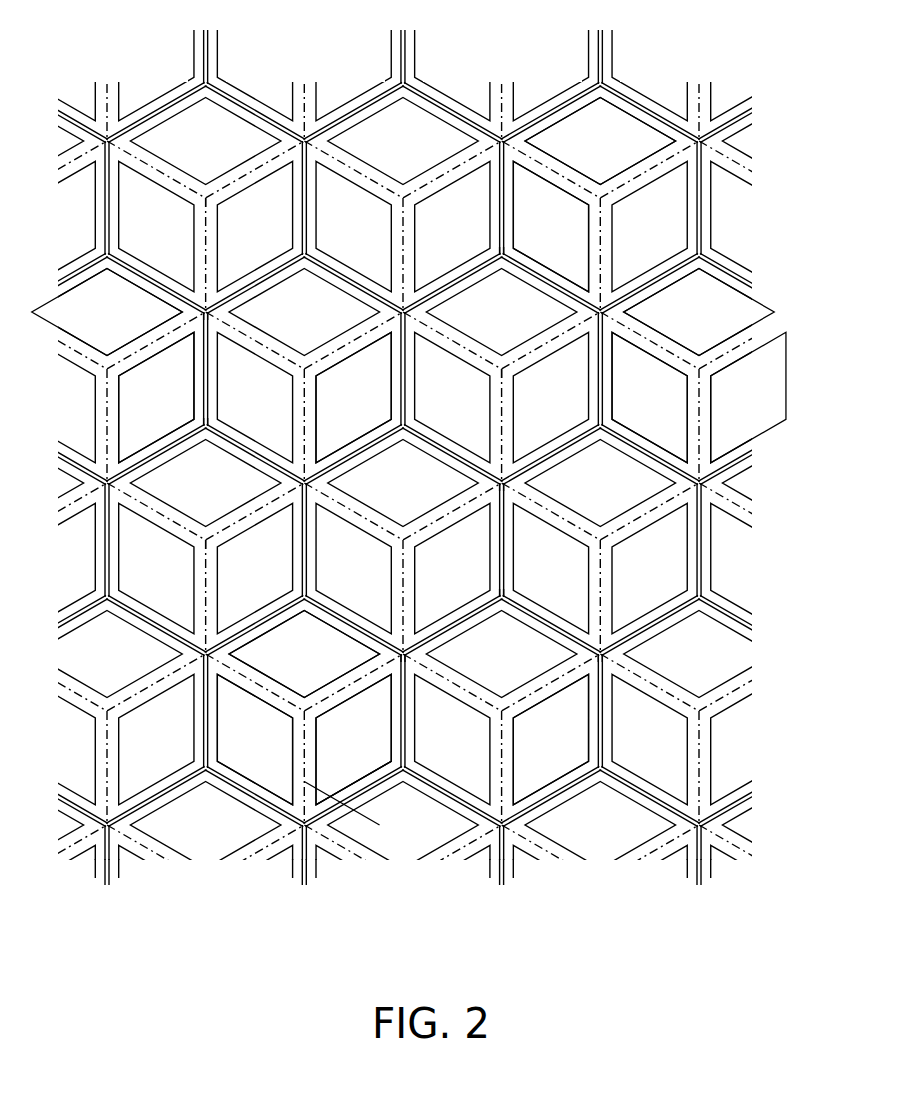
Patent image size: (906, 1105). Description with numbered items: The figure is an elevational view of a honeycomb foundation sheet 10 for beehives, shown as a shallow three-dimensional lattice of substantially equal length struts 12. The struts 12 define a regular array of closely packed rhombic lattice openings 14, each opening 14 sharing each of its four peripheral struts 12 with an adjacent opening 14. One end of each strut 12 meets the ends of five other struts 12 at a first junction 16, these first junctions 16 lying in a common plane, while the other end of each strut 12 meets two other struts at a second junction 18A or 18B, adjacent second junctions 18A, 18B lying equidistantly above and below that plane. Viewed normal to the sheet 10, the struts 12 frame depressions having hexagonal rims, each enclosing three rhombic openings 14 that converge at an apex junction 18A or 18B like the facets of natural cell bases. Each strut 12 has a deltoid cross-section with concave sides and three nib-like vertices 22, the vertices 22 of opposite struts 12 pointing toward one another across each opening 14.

The honeycomb foundation sheet 10 is at (207, 905).
The strut 12 is at (513, 215).
The rhombic lattice opening 14 is at (592, 133).
The first junction 16 is at (203, 311).
The second junction 18A is at (500, 250).
The second junction 18B is at (197, 207).
The nib-like vertex 22 is at (398, 768).